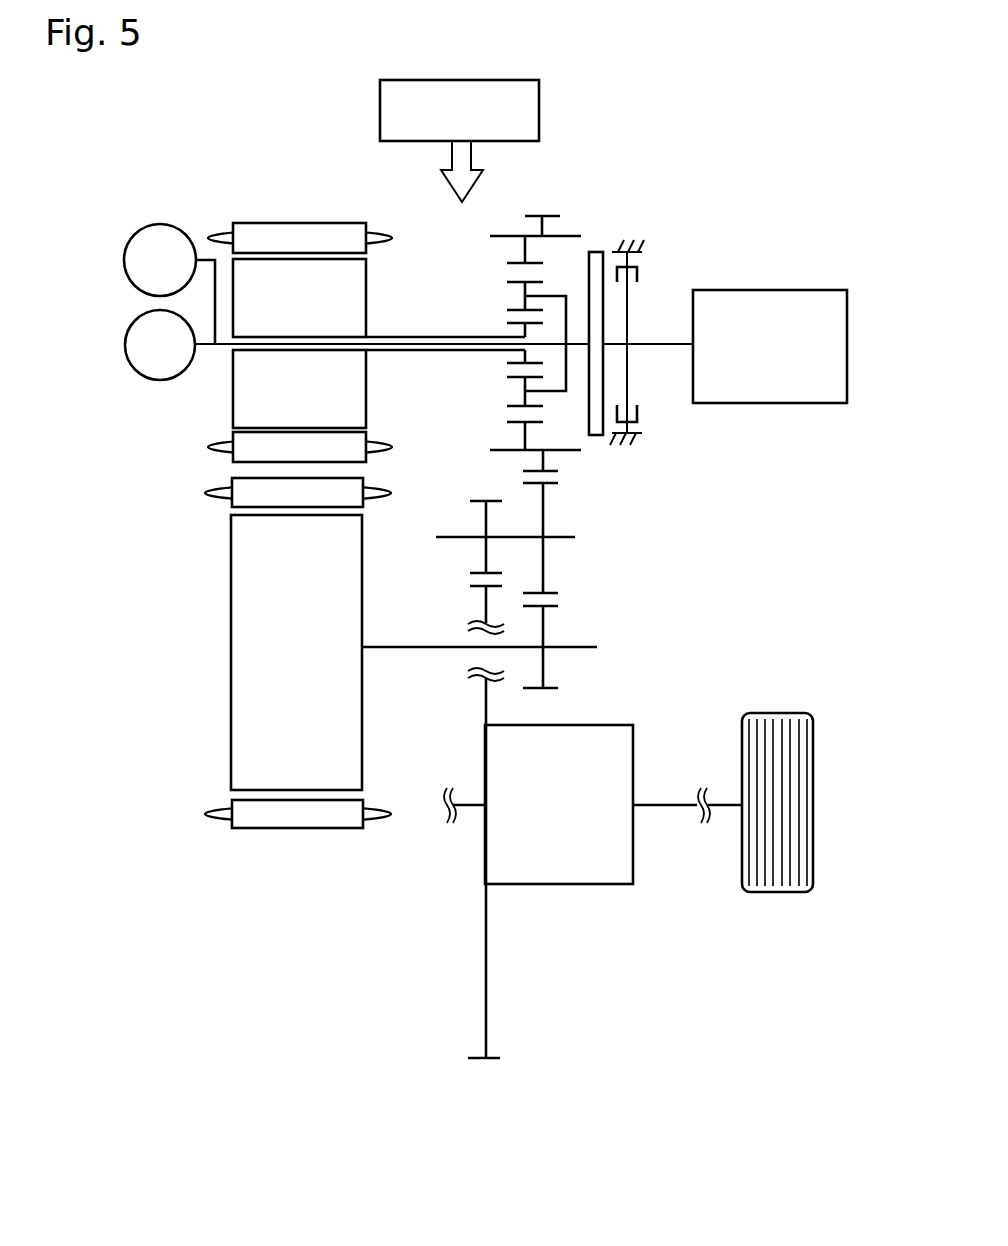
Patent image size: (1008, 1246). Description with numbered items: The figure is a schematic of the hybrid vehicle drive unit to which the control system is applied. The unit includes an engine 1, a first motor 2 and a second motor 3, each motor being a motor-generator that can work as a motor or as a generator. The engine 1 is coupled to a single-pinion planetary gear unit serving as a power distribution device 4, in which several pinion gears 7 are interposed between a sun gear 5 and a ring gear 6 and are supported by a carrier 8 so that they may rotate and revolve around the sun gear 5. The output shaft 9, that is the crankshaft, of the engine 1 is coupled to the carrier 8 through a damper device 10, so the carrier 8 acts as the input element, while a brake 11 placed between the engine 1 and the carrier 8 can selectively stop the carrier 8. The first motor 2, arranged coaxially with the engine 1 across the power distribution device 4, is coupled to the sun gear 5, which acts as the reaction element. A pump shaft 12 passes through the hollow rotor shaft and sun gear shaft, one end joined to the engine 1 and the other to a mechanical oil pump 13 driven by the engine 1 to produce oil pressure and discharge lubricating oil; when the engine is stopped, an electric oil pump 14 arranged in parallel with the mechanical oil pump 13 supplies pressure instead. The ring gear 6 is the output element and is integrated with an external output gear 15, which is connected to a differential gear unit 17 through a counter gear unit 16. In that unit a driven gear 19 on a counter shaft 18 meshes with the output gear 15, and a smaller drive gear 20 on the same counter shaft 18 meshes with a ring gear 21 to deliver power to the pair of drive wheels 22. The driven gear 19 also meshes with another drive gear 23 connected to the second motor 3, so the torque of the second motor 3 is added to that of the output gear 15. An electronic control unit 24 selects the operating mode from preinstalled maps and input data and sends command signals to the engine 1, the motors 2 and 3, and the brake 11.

The engine 1 is at (768, 290).
The first motor 2 is at (298, 202).
The second motor 3 is at (207, 764).
The power distribution device 4 is at (522, 318).
The sun gear 5 is at (506, 323).
The ring gear 6 is at (506, 263).
The pinion gears 7 is at (506, 283).
The carrier 8 is at (555, 295).
The output shaft 9 is at (662, 348).
The damper device 10 is at (595, 436).
The brake 11 is at (640, 270).
The pump shaft 12 is at (213, 347).
The mechanical oil pump 13 is at (159, 381).
The electric oil pump 14 is at (168, 224).
The output gear 15 is at (551, 215).
The counter gear unit 16 is at (542, 587).
The differential gear unit 17 is at (633, 735).
The counter shaft 18 is at (572, 535).
The driven gear 19 is at (557, 592).
The drive gear 20 is at (472, 502).
The ring gear 21 is at (477, 587).
The drive wheels 22 is at (780, 713).
The drive gear 23 is at (558, 687).
The electronic control unit 24 is at (540, 115).